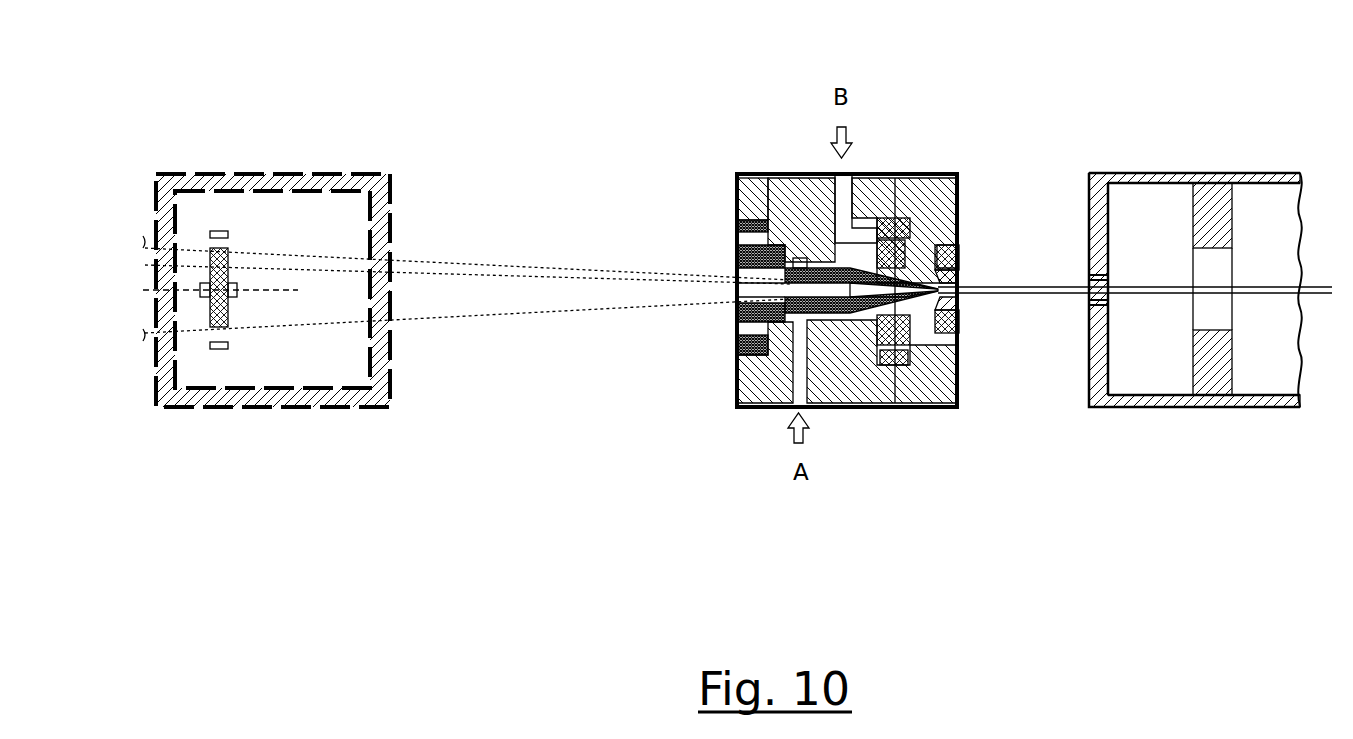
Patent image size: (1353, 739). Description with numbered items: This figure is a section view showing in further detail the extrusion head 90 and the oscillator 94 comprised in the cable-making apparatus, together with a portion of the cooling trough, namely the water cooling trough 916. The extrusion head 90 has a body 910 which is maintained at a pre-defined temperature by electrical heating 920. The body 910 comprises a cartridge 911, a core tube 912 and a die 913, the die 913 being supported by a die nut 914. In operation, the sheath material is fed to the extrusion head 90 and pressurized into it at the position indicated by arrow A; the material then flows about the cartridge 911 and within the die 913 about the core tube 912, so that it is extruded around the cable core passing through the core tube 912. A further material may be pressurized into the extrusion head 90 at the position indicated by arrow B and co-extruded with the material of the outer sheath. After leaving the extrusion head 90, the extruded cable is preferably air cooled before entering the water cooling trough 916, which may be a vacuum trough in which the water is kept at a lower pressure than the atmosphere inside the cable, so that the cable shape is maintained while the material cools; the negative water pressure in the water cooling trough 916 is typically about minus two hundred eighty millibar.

The oscillator 94 is at (261, 141).
The extrusion head 90 is at (780, 138).
The body 910 is at (868, 378).
The cartridge 911 is at (737, 250).
The core tube 912 is at (898, 277).
The die 913 is at (943, 246).
The die nut 914 is at (946, 334).
The electrical heating 920 is at (884, 176).
The water cooling trough 916 is at (1219, 158).